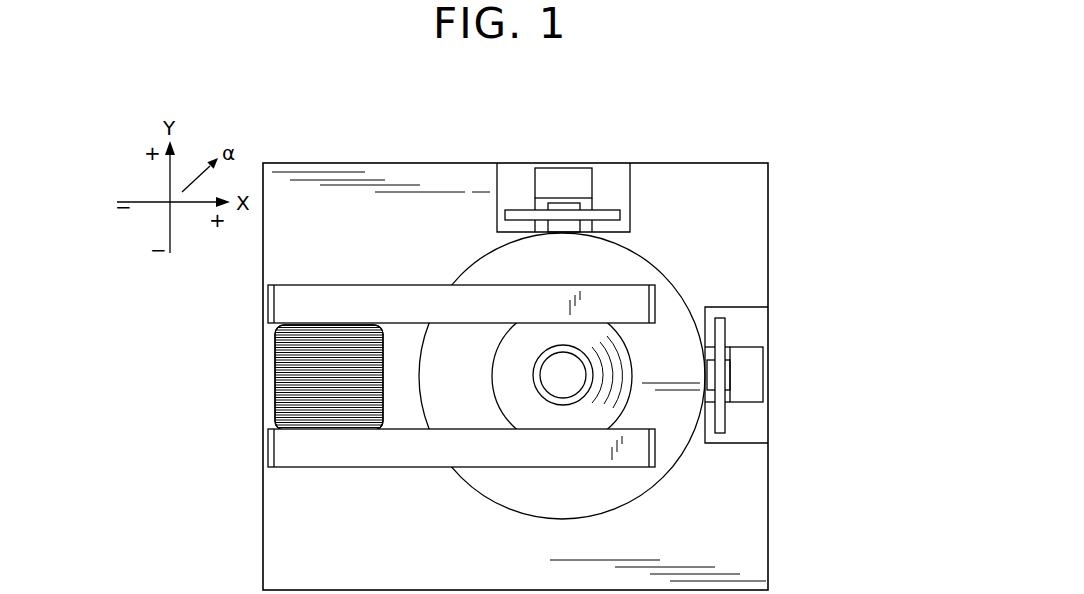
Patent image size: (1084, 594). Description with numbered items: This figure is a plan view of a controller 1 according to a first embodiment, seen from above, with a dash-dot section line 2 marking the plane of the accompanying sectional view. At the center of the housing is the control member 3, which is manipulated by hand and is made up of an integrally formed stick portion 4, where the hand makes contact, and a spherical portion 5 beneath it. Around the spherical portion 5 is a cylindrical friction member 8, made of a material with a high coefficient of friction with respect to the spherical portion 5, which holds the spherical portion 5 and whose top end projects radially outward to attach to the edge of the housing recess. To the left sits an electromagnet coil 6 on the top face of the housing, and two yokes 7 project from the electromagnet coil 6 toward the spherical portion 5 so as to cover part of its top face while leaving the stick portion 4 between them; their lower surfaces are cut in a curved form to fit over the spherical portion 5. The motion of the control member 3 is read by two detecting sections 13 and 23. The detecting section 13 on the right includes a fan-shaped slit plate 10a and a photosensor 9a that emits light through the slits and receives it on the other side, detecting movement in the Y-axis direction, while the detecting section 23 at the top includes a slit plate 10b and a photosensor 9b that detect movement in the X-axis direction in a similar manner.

The controller 1 is at (696, 154).
The section line 2- 2 is at (253, 373).
The control member 3 is at (523, 398).
The stick portion 4 is at (562, 400).
The spherical portion 5 is at (581, 417).
The electromagnet coil 6 is at (278, 393).
The yokes 7 is at (322, 300).
The friction member 8 is at (638, 265).
The photosensor 9a is at (755, 370).
The photosensor 9b is at (570, 180).
The slit plate 10a is at (722, 417).
The slit plate 10b is at (516, 211).
The detecting section 13 is at (750, 436).
The detecting section 23 is at (605, 185).